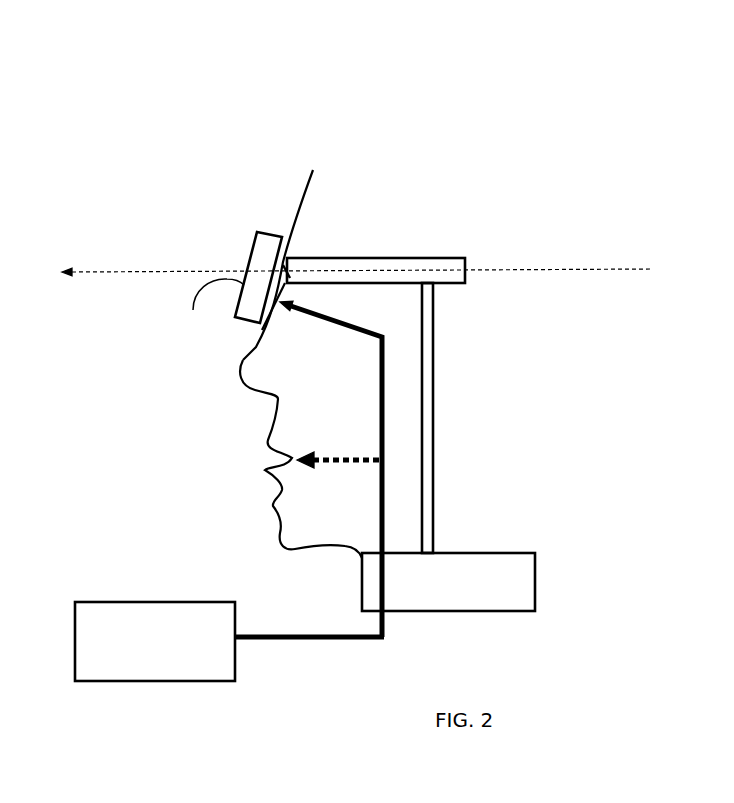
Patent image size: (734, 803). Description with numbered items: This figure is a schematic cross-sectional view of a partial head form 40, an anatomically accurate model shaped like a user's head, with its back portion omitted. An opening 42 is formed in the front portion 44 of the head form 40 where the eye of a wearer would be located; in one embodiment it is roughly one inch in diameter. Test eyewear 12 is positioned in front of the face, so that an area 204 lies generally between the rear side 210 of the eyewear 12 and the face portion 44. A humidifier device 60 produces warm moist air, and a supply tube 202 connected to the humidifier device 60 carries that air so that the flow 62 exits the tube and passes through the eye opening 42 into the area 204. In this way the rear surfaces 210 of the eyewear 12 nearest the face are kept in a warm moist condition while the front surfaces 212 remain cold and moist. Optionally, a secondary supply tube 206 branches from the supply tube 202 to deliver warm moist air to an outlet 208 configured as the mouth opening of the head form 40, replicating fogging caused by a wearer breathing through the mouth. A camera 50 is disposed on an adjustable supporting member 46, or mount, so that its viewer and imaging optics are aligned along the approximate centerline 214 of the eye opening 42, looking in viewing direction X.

The head form 40 is at (126, 107).
The front portion 44 is at (271, 190).
The test eyewear 12 is at (252, 248).
The opening 42 is at (296, 264).
The camera 50 is at (373, 257).
The centerline 214 is at (373, 273).
The front surfaces 212 is at (608, 322).
The rear side 210 is at (258, 333).
The area 204 is at (230, 364).
The outlet 208 is at (243, 468).
The secondary supply tube 206 is at (338, 444).
The flow 62 is at (331, 468).
The supporting member 46 is at (448, 582).
The humidifier device 60 is at (155, 641).
The supply tube 202 is at (265, 640).